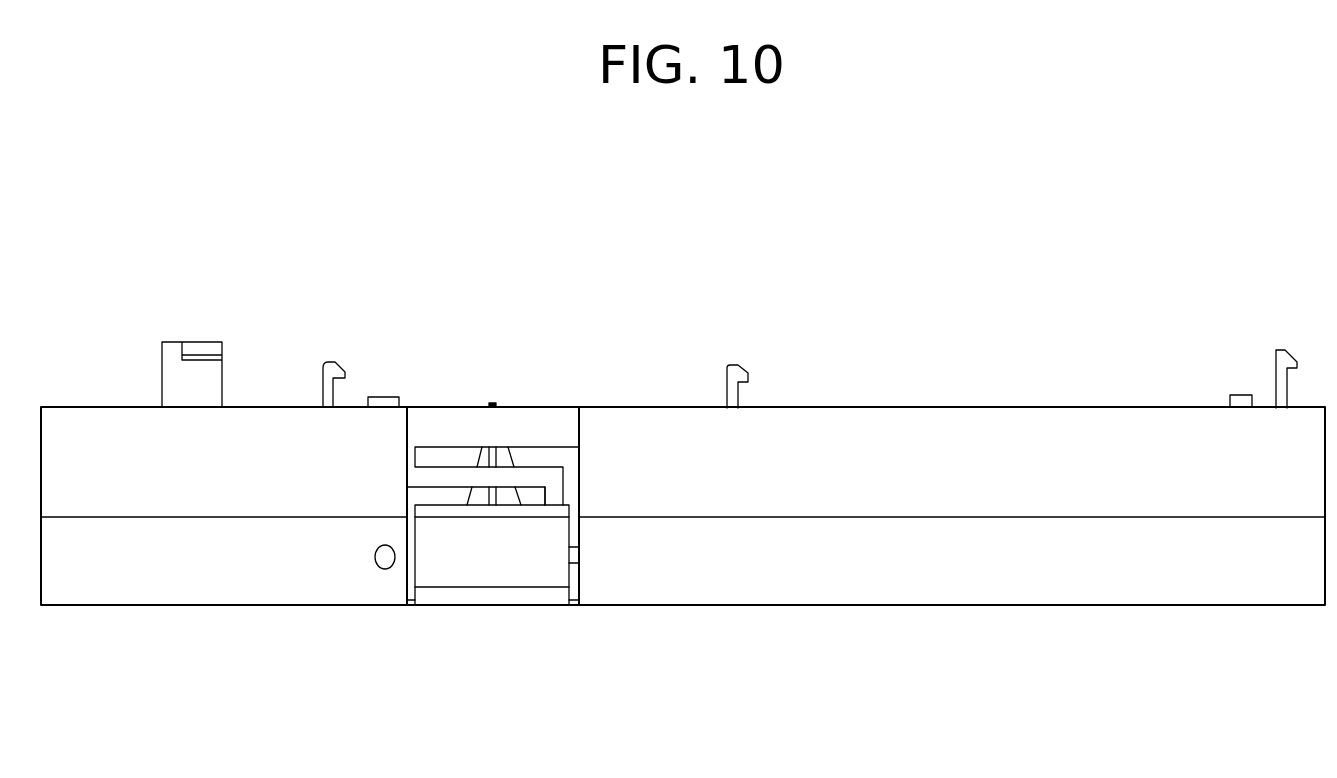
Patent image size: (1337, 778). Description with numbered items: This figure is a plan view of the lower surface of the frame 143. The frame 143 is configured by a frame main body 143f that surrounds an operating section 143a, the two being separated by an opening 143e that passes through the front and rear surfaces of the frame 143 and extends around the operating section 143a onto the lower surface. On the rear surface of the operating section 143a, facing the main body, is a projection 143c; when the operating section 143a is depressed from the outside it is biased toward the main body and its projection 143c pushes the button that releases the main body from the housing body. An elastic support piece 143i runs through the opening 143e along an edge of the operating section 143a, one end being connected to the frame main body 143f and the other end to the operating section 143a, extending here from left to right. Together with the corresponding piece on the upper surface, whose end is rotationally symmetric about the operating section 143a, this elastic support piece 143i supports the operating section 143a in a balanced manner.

The frame 143 is at (356, 369).
The frame main body 143f is at (397, 437).
The projection 143c is at (494, 404).
The elastic support piece 143i is at (546, 397).
The opening 143e is at (519, 462).
The operating section 143a is at (478, 620).